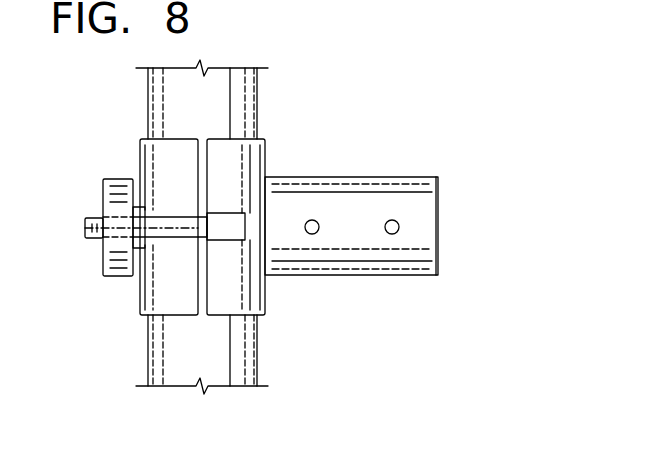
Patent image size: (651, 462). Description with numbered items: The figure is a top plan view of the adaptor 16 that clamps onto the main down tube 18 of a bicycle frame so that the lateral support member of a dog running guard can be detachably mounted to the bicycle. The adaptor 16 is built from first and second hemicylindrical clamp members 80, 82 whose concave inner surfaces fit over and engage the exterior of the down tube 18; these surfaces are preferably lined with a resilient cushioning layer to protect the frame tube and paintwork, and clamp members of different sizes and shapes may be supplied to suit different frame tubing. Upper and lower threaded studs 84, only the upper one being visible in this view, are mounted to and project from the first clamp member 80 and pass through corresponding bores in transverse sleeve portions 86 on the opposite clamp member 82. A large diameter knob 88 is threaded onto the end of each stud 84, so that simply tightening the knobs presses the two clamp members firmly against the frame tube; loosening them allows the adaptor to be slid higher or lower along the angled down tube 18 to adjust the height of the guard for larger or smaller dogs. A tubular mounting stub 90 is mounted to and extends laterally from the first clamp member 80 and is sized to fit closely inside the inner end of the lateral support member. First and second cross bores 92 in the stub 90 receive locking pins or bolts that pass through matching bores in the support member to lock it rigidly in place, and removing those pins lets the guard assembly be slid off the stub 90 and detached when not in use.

The adaptor 16 is at (307, 118).
The main down tube 18 is at (156, 103).
The first clamp member 80 is at (255, 291).
The second clamp member 82 is at (152, 290).
The threaded stud 84 is at (84, 228).
The transverse sleeve portion 86 is at (170, 212).
The knob 88 is at (110, 197).
The tubular mounting stub 90 is at (362, 188).
The cross bore 92 is at (317, 232).